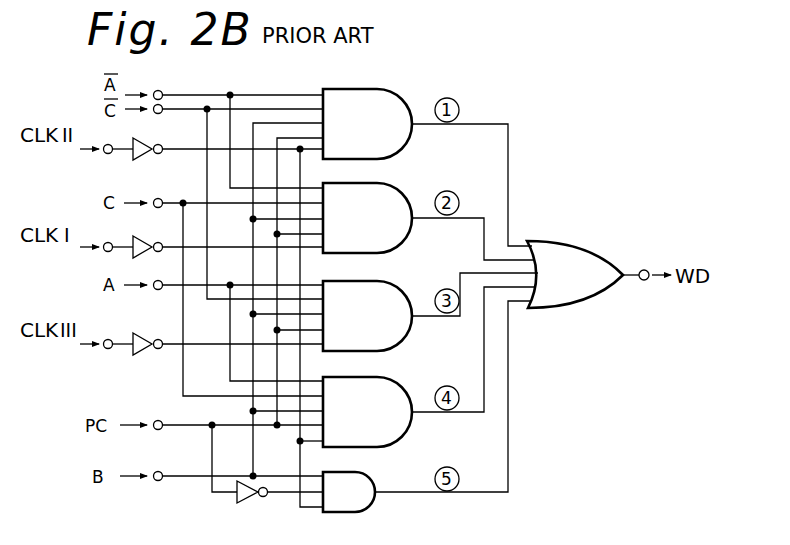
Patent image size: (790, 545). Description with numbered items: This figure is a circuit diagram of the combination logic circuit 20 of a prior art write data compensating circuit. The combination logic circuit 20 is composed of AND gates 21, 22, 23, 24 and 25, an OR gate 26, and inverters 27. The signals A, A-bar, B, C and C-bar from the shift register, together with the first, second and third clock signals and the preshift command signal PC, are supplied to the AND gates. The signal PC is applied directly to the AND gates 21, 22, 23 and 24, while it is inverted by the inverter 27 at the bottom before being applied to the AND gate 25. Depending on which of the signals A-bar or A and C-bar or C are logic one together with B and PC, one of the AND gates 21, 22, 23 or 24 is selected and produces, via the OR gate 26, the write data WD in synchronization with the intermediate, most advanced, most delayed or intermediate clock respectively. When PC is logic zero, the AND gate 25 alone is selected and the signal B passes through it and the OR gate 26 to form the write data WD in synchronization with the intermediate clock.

The combination logic circuit 20 is at (380, 70).
The AND gate 21 is at (384, 90).
The AND gate 22 is at (393, 184).
The AND gate 23 is at (393, 281).
The AND gate 24 is at (395, 378).
The AND gate 25 is at (380, 479).
The OR gate 26 is at (575, 240).
The inverter 27 is at (148, 156).